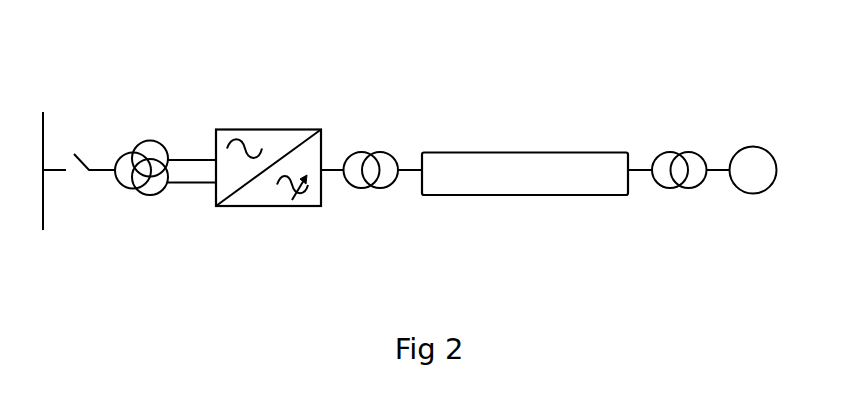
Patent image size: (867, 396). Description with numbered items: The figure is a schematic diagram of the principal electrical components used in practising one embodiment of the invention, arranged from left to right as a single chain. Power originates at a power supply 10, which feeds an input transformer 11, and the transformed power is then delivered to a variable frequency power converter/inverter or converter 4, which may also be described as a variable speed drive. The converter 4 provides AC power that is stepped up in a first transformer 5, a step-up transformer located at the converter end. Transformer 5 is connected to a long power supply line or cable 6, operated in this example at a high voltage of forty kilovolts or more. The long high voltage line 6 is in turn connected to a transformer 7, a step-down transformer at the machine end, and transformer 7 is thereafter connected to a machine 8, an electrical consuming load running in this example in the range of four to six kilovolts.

The power supply 10 is at (51, 150).
The input transformer 11 is at (145, 206).
The converter 4 is at (279, 138).
The transformer 5 is at (383, 145).
The cable 6 is at (537, 149).
The transformer 7 is at (690, 145).
The machine 8 is at (753, 148).